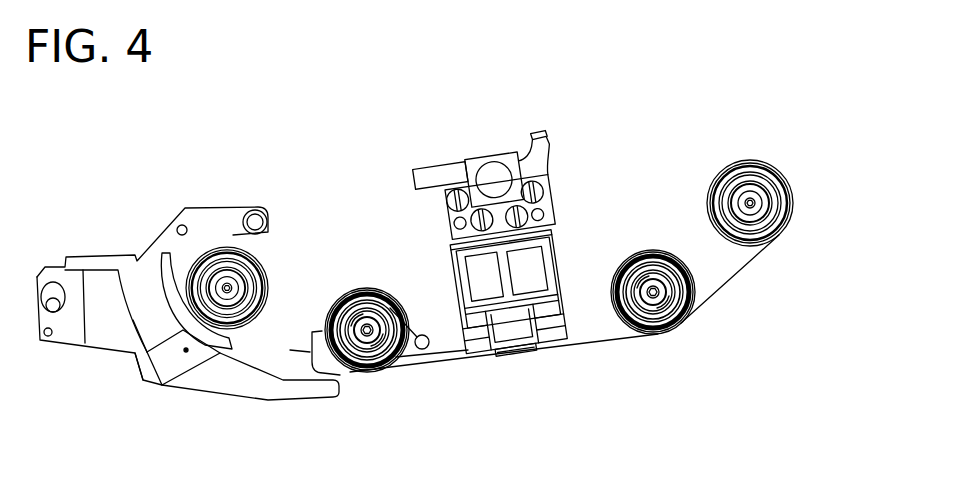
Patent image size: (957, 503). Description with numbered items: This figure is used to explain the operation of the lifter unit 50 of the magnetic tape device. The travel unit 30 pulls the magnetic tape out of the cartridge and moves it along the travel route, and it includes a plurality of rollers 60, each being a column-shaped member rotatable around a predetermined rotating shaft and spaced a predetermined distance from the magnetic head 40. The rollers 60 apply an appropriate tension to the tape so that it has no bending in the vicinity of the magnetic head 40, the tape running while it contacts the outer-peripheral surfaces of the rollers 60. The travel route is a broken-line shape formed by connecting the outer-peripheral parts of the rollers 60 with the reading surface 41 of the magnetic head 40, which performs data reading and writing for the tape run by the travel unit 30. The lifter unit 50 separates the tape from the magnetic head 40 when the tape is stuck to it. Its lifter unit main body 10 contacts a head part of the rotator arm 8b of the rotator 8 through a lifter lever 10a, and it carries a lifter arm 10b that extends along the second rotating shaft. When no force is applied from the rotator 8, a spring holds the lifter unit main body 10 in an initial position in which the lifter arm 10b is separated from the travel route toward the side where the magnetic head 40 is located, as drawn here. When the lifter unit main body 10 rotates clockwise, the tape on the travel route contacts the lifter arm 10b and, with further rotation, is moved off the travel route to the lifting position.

The rotator 8 is at (160, 370).
The rotator arm 8b is at (327, 392).
The lifter unit main body 10 is at (357, 372).
The lifter lever 10a is at (302, 365).
The lifter arm 10b is at (421, 335).
The travel unit 30 is at (290, 200).
The magnetic head 40 is at (548, 198).
The reading surface 41 is at (517, 358).
The lifter unit 50 is at (412, 392).
The rollers 60 is at (227, 247).